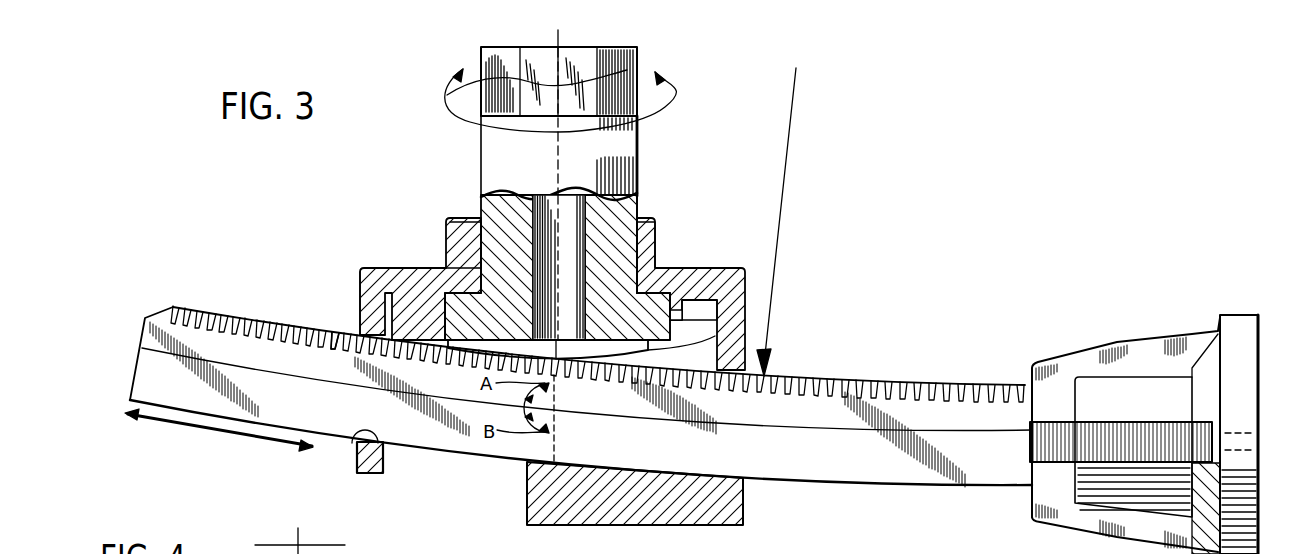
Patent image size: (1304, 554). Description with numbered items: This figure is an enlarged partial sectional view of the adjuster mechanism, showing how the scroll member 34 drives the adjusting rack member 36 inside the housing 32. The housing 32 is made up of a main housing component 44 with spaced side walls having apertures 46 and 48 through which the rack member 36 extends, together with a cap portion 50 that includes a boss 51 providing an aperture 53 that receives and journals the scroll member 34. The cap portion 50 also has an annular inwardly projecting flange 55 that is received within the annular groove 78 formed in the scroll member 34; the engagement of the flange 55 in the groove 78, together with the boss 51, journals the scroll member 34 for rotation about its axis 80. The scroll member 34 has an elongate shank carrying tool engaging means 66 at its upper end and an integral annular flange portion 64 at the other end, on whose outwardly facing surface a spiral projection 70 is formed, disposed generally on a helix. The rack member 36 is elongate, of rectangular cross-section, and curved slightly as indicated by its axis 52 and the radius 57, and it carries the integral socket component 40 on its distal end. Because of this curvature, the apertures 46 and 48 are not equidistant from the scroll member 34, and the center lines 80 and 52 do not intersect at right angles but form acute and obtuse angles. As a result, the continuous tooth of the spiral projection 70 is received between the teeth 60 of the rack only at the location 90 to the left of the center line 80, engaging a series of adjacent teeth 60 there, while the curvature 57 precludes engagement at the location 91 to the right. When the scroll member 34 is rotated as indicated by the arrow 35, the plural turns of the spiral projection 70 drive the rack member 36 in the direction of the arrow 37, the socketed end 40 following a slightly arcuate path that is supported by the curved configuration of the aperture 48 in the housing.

The housing 32 is at (350, 262).
The scroll member 34 is at (635, 190).
The arrow 35 is at (452, 104).
The adjusting rack member 36 is at (940, 490).
The arrow 37 is at (197, 428).
The socket component 40 is at (1078, 362).
The main housing component 44 is at (368, 302).
The aperture 46 is at (352, 444).
The aperture 48 is at (742, 466).
The cap portion 50 is at (410, 268).
The boss 51 is at (625, 233).
The axis 52 is at (872, 437).
The aperture 53 is at (652, 224).
The annular inwardly projecting flange 55 is at (670, 316).
The radius 57 is at (790, 210).
The teeth 60 is at (858, 370).
The annular flange portion 64 is at (648, 300).
The tool engaging means 66 is at (482, 68).
The spiral projection 70 is at (700, 348).
The annular groove 78 is at (338, 334).
The axis 80 is at (570, 200).
The location of engagement 90 is at (442, 371).
The location of non-engagement 91 is at (678, 426).